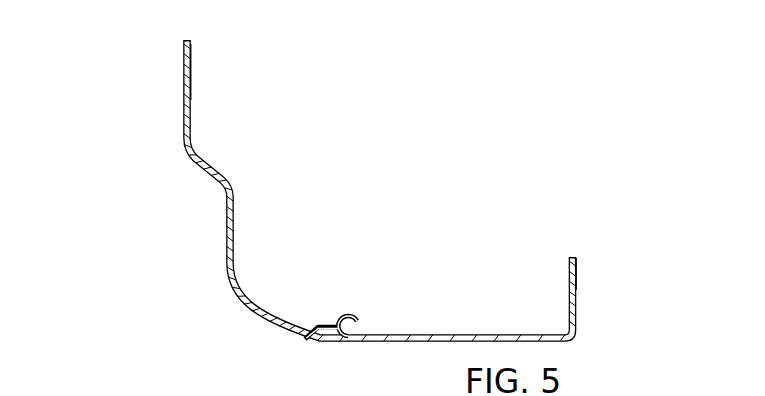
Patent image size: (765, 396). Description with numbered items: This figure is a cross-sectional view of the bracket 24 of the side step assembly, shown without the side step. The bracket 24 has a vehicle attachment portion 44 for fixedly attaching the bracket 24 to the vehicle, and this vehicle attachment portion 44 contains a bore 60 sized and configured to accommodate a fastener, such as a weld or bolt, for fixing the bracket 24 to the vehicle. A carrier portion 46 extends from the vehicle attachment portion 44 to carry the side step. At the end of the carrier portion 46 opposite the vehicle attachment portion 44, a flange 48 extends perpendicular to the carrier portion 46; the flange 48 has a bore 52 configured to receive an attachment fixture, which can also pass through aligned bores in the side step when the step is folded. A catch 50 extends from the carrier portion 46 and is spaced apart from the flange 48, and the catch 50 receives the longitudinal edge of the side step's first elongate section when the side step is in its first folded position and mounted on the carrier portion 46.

The bracket 24 is at (150, 99).
The vehicle attachment portion 44 is at (191, 48).
The bore 60 is at (191, 62).
The carrier portion 46 is at (440, 334).
The flange 48 is at (576, 303).
The bore 52 is at (576, 271).
The catch 50 is at (313, 322).